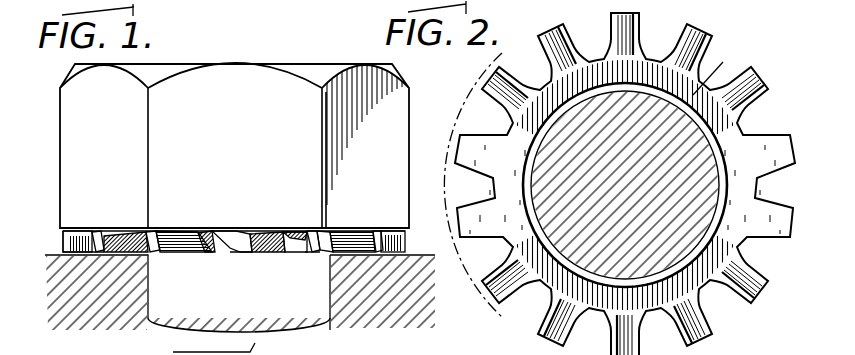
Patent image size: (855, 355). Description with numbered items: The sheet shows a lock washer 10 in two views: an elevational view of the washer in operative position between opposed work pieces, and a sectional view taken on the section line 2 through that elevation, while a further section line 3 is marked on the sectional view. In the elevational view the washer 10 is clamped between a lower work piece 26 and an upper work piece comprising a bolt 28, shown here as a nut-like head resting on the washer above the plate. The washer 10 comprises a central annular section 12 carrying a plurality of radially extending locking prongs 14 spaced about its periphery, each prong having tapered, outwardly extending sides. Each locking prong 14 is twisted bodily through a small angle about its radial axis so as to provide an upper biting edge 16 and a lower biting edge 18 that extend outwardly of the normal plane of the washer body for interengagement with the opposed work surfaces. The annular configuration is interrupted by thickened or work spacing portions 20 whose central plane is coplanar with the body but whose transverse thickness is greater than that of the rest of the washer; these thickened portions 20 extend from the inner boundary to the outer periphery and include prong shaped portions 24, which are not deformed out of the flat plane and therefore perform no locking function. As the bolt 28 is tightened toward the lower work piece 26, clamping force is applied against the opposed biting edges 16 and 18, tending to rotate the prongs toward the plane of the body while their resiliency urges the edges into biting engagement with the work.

In FIG. 1, the section line 2— 2 is at (53, 230).
In FIG. 2, the section line 3— 3 is at (490, 40).
In FIG. 2, the lock washer 10 is at (660, 48).
In FIG. 2, the central annular section 12 is at (727, 48).
In FIG. 2, the locking prongs 14 is at (617, 44).
In FIG. 1, the upper biting edge 16 is at (307, 230).
In FIG. 2, the upper biting edge 16 is at (742, 288).
In FIG. 1, the lower biting edge 18 is at (315, 253).
In FIG. 1, the thickened or work spacing portions 20 is at (63, 258).
In FIG. 2, the thickened or work spacing portions 20 is at (737, 177).
In FIG. 2, the prong shaped portions 24 is at (476, 176).
In FIG. 1, the lower work piece 26 is at (115, 300).
In FIG. 1, the bolt 28 is at (236, 74).